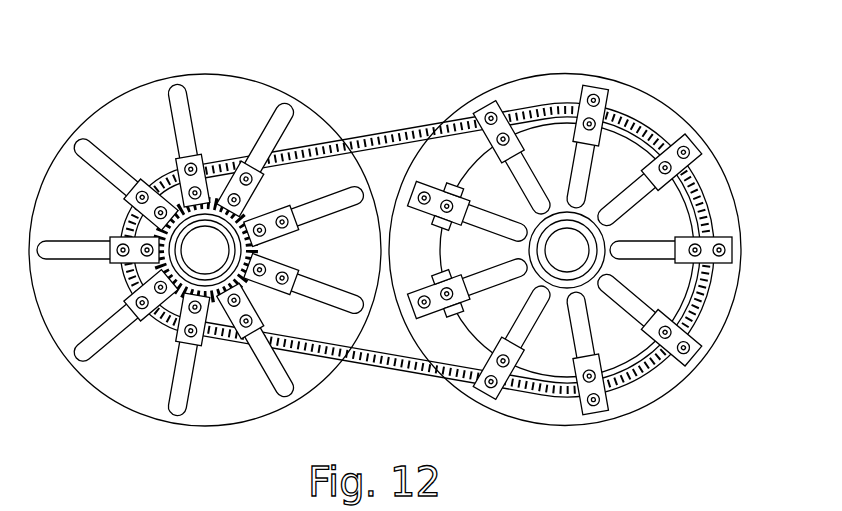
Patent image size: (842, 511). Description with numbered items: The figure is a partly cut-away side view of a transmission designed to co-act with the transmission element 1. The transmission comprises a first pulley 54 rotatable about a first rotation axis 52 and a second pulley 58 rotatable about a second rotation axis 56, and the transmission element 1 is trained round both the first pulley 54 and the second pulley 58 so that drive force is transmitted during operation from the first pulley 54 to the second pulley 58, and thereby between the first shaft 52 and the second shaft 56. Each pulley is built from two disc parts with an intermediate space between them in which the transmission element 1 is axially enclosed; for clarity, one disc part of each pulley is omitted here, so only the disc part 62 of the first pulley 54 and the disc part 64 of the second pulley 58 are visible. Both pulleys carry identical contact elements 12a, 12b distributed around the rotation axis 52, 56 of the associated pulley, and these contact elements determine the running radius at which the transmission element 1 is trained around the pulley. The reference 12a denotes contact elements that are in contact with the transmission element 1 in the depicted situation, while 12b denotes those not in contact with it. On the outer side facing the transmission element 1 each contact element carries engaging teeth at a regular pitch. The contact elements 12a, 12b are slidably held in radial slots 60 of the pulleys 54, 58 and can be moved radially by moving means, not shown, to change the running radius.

The transmission element 1 is at (383, 368).
The contact element 12a is at (128, 285).
The contact element 12b is at (252, 248).
The first rotation axis 52 is at (205, 250).
The first pulley 54 is at (106, 417).
The second rotation axis 56 is at (567, 250).
The second pulley 58 is at (688, 95).
The radial slot 60 is at (178, 103).
The disc part 62 is at (265, 92).
The disc part 64 is at (622, 88).